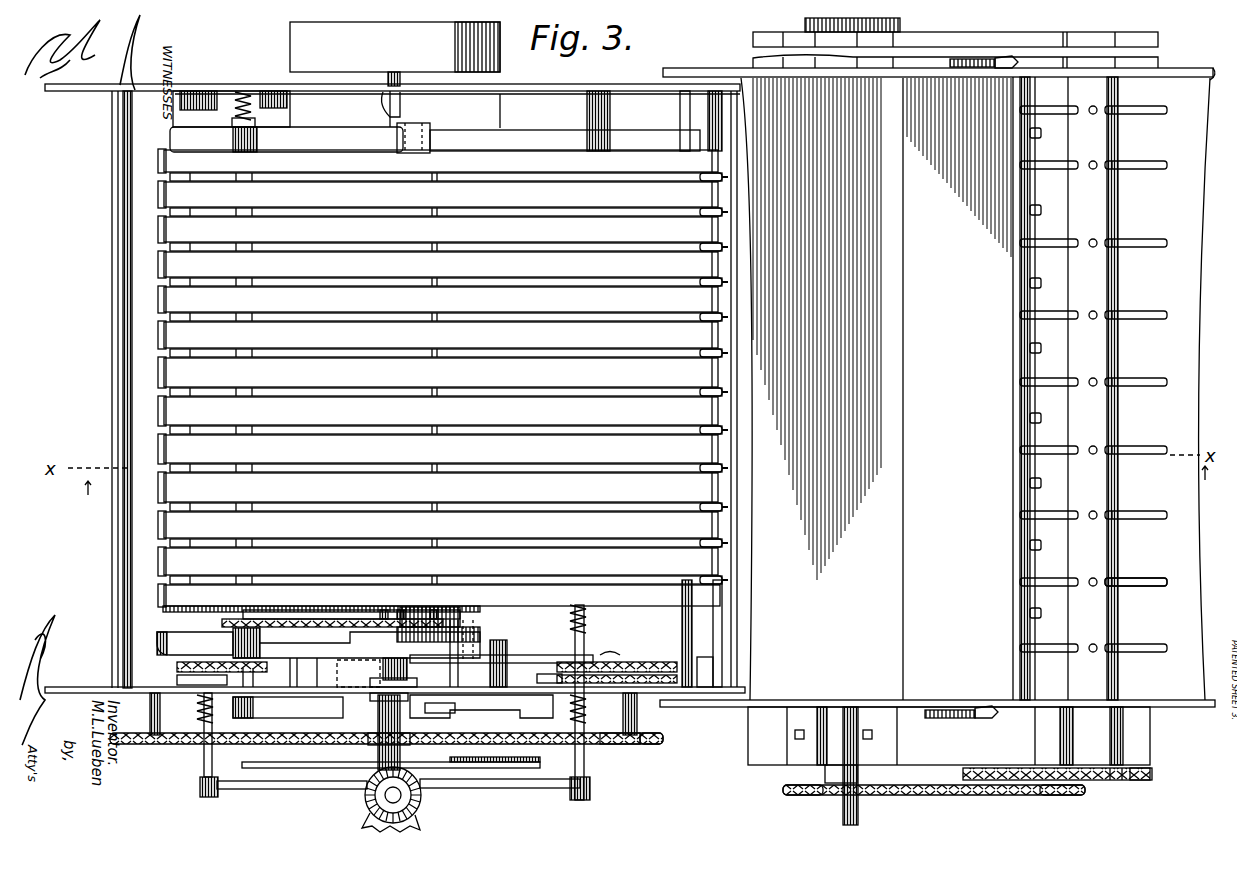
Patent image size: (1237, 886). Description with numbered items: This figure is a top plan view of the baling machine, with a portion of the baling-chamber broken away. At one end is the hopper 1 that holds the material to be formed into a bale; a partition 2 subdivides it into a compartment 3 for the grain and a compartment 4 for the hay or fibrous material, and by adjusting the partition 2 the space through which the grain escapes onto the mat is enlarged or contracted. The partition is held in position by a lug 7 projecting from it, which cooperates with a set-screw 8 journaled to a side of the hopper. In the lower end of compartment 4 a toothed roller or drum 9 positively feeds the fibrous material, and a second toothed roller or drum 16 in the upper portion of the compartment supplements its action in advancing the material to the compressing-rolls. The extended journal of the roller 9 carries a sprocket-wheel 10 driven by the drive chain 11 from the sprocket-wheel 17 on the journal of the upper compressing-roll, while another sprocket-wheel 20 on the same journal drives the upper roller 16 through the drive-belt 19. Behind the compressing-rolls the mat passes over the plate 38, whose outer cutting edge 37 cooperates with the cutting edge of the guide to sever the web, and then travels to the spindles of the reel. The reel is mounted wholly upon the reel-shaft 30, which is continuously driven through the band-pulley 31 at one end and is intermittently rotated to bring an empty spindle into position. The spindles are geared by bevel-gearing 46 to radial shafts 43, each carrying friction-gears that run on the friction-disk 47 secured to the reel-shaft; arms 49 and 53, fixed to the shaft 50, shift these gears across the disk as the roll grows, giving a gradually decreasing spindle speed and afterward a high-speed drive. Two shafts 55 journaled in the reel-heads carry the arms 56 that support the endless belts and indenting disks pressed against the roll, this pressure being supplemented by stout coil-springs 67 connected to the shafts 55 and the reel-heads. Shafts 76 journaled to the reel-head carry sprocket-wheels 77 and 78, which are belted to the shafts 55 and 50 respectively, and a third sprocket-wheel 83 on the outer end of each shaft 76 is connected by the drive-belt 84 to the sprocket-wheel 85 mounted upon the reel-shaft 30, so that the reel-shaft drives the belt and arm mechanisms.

The hopper 1 is at (939, 63).
The partition 2 is at (1018, 502).
The compartment 3 is at (876, 389).
The compartment 4 is at (1139, 388).
The lug 7 is at (958, 60).
The set-screw 8 is at (990, 58).
The toothed roller 9 is at (1028, 365).
The sprocket-wheel 10 is at (1070, 795).
The drive chain 11 is at (960, 795).
The toothed roller 16 is at (1118, 580).
The sprocket-wheel 17 is at (800, 795).
The drive-belt 19 is at (1118, 780).
The sprocket-wheel 20 is at (1003, 763).
The reel-shaft 30 is at (207, 760).
The band-pulley 31 is at (395, 54).
The cutting edge 37 is at (115, 380).
The plate 38 is at (175, 632).
The shafts 43 is at (368, 812).
The bevel-gearing 46 is at (405, 772).
The friction-disk 47 is at (545, 757).
The arm 49 is at (305, 790).
The shaft 50 is at (584, 778).
The arm 53 is at (536, 789).
The shafts 55 is at (255, 210).
The arm 56 is at (312, 137).
The coil-springs 67 is at (246, 92).
The shafts 76 is at (665, 712).
The sprocket-wheel 77 is at (660, 658).
The sprocket-wheel 78 is at (690, 682).
The sprocket-wheel 83 is at (655, 745).
The drive-belt 84 is at (607, 745).
The sprocket-wheel 85 is at (393, 712).